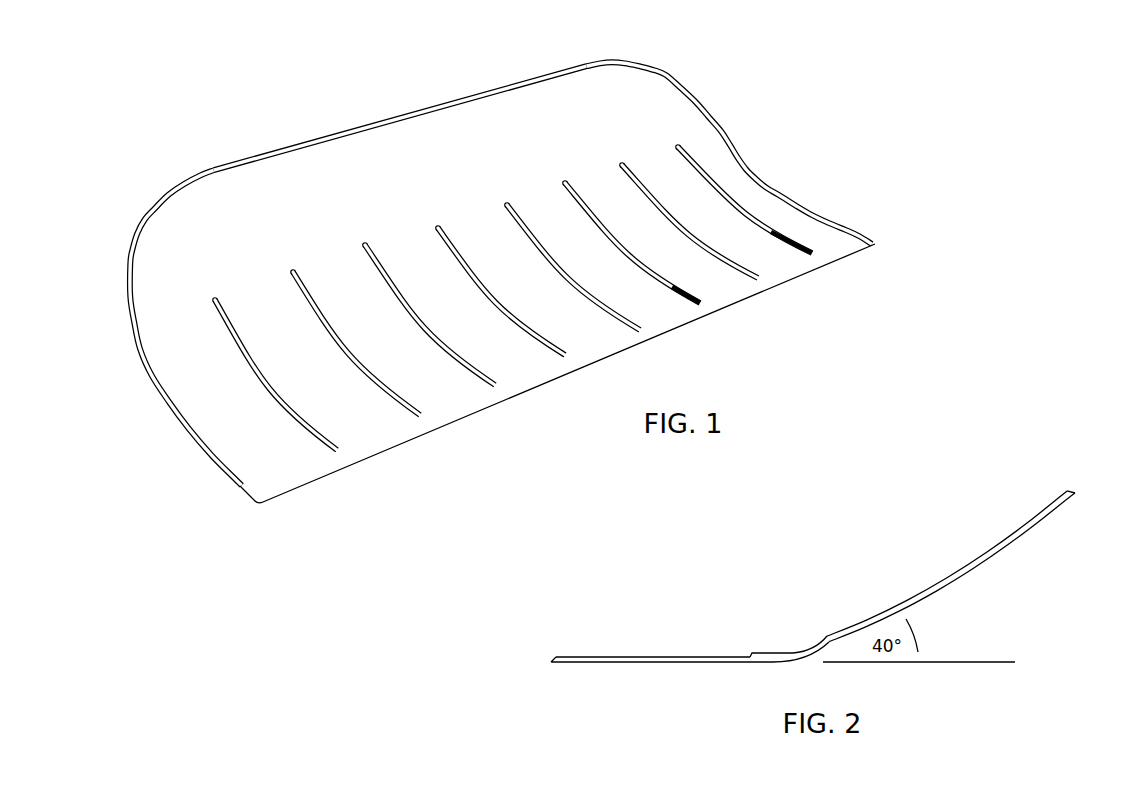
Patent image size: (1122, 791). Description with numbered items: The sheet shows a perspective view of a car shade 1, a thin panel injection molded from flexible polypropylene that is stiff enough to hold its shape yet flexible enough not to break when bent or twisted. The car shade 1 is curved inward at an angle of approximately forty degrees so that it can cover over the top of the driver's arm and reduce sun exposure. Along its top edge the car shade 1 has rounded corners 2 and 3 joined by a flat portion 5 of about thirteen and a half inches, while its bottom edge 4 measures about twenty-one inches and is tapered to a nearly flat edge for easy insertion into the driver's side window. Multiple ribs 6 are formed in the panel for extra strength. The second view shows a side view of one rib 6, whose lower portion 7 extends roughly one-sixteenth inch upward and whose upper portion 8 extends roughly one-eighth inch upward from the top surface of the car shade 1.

In FIG. 1, the car shade 1 is at (483, 309).
In FIG. 1, the rounded corner 2 is at (670, 74).
In FIG. 1, the rounded corner 3 is at (148, 215).
In FIG. 1, the bottom edge 4 is at (482, 412).
In FIG. 1, the flat portion 5 is at (288, 145).
In FIG. 1, the rib 6 is at (288, 420).
In FIG. 2, the rib 6 is at (912, 576).
In FIG. 2, the lower portion 7 is at (672, 667).
In FIG. 2, the upper portion 8 is at (975, 572).